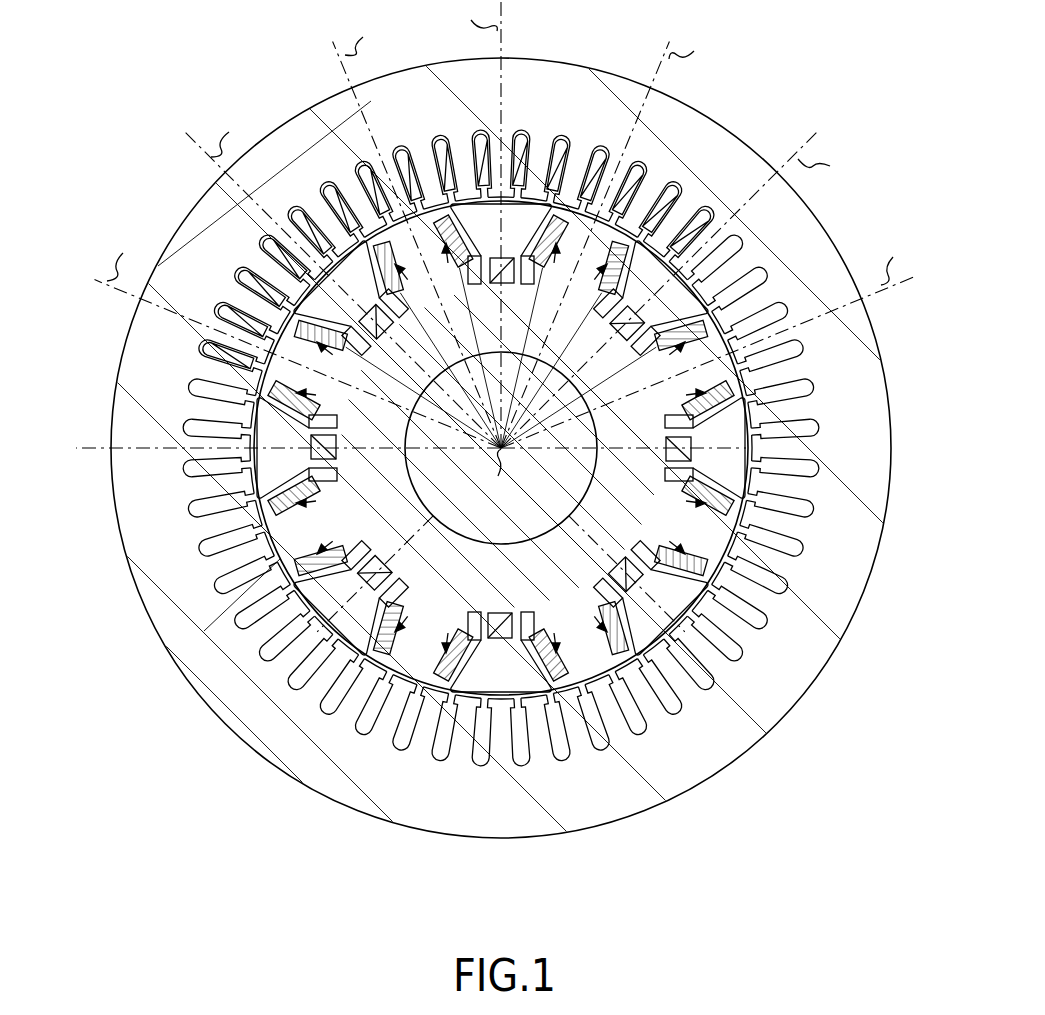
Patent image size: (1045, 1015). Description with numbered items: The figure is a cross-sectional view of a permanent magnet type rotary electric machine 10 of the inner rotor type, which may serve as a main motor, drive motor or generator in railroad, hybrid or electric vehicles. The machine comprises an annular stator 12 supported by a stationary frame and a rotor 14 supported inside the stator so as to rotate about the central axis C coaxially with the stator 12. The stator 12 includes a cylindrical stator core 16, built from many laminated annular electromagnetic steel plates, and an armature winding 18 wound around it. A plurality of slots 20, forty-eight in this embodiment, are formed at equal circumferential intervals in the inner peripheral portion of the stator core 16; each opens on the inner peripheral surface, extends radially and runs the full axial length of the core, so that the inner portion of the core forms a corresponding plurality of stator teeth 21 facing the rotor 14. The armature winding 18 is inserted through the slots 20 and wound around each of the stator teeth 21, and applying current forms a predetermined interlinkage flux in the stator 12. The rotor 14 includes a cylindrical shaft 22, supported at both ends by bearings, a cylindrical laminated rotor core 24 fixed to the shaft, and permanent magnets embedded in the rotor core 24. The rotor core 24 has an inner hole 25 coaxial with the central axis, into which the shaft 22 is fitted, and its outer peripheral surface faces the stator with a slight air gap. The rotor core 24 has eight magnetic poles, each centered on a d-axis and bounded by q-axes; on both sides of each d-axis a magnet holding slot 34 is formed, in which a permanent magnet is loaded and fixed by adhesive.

The rotary electric machine 10 is at (130, 707).
The stator 12 is at (297, 779).
The rotor 14 is at (320, 592).
The stator core 16 is at (135, 340).
The armature winding 18 is at (290, 203).
The slots 20 is at (747, 660).
The stator teeth 21 is at (397, 690).
The shaft 22 is at (581, 483).
The rotor core 24 is at (295, 598).
The inner hole 25 is at (500, 543).
The magnet holding slot 34 is at (463, 268).